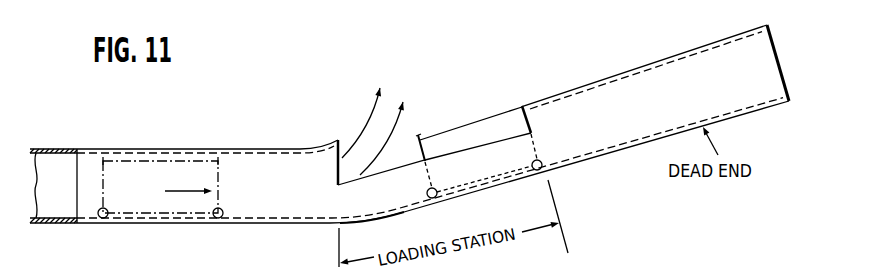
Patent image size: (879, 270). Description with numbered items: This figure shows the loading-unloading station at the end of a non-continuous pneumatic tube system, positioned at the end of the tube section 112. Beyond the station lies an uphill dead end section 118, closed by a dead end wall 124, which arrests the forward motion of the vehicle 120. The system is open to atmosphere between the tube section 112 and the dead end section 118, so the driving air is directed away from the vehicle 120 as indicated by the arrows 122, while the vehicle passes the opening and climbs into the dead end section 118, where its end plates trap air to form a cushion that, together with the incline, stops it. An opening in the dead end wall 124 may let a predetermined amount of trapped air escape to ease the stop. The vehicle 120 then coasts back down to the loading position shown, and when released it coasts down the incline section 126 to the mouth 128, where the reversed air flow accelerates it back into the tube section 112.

The tube section 112 is at (249, 149).
The uphill dead end section 118 is at (630, 70).
The vehicle 120 is at (206, 175).
The driving air direction 122 is at (374, 117).
The dead end wall 124 is at (775, 43).
The incline section 126 is at (418, 208).
The mouth 128 is at (347, 146).